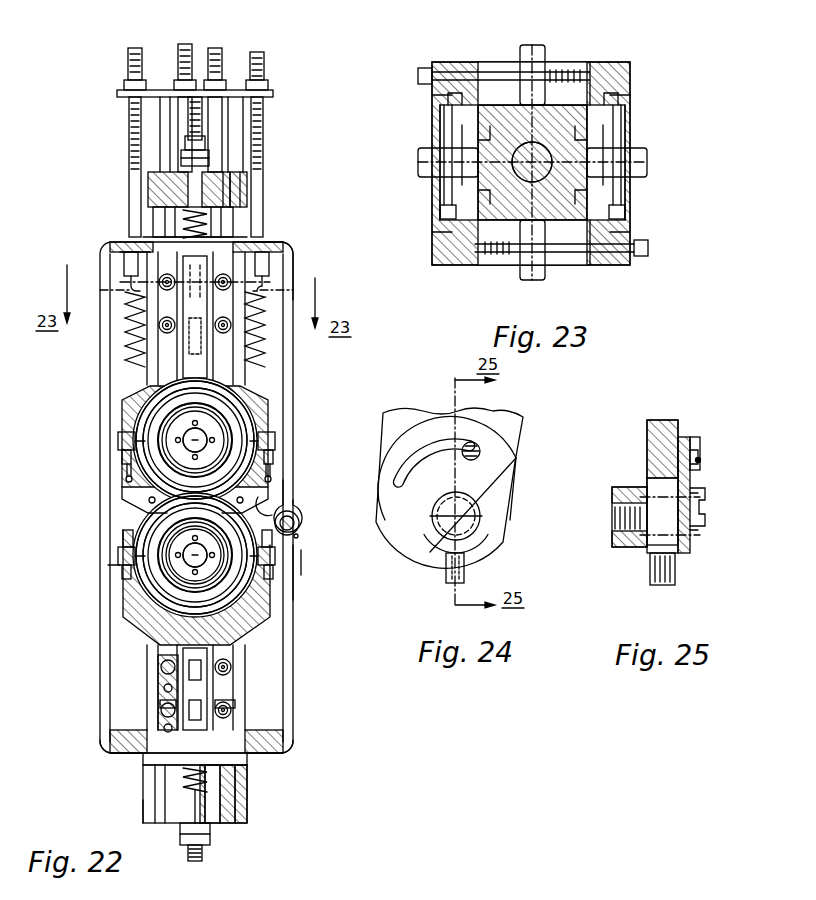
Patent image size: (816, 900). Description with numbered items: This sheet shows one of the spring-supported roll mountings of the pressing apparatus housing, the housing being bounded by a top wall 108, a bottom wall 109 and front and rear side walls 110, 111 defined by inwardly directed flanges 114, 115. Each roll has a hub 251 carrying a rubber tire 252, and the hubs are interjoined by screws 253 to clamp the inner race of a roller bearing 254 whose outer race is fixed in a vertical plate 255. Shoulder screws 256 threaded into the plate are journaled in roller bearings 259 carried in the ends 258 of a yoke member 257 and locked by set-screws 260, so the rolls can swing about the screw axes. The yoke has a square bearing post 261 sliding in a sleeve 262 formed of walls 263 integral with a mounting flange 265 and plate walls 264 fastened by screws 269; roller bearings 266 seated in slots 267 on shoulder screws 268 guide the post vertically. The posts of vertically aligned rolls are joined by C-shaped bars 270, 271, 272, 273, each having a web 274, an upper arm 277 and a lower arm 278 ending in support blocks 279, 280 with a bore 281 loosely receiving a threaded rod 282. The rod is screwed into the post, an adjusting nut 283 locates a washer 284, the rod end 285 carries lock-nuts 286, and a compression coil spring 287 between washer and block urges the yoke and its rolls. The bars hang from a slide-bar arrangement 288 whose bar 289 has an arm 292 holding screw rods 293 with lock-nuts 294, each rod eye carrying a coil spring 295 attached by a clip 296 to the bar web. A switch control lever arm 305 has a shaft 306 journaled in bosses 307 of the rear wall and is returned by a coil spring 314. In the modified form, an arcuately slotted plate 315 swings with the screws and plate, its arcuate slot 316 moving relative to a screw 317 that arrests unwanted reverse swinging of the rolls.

In FIG. 22, the top wall 108 is at (272, 254).
In FIG. 22, the bottom wall 109 is at (262, 752).
In FIG. 22, the front side wall 110 is at (100, 300).
In FIG. 22, the rear side wall 111 is at (294, 283).
In FIG. 22, the flange 114 is at (108, 724).
In FIG. 22, the flange 115 is at (103, 358).
In FIG. 22, the hub 251 is at (206, 428).
In FIG. 22, the rubber tire 252 is at (228, 404).
In FIG. 22, the screws 253 is at (208, 446).
In FIG. 22, the roller bearing 254 is at (110, 566).
In FIG. 22, the plate 255 is at (160, 572).
In FIG. 25, the plate 255 is at (621, 495).
In FIG. 22, the shoulder screws 256 is at (118, 441).
In FIG. 24, the shoulder screws 256 is at (462, 521).
In FIG. 25, the shoulder screws 256 is at (705, 530).
In FIG. 22, the yoke member 257 is at (135, 400).
In FIG. 24, the yoke member 257 is at (518, 460).
In FIG. 22, the yoke ends 258 is at (135, 418).
In FIG. 24, the yoke ends 258 is at (520, 485).
In FIG. 25, the yoke ends 258 is at (660, 455).
In FIG. 22, the roller bearings 259 is at (122, 455).
In FIG. 24, the roller bearings 259 is at (488, 540).
In FIG. 25, the roller bearings 259 is at (662, 508).
In FIG. 22, the set-screws 260 is at (126, 466).
In FIG. 24, the set-screws 260 is at (465, 568).
In FIG. 25, the set-screws 260 is at (675, 572).
In FIG. 22, the bearing post 261 is at (207, 345).
In FIG. 23, the bearing post 261 is at (590, 118).
In FIG. 22, the sleeve 262 is at (283, 247).
In FIG. 23, the sleeve 262 is at (432, 118).
In FIG. 23, the walls 263 is at (445, 193).
In FIG. 23, the walls 264 is at (592, 66).
In FIG. 22, the mounting flange 265 is at (247, 234).
In FIG. 22, the roller bearings 266 is at (231, 328).
In FIG. 23, the roller bearings 266 is at (542, 60).
In FIG. 23, the slots 267 is at (516, 62).
In FIG. 23, the shoulder screws 268 is at (418, 78).
In FIG. 22, the screws 269 is at (160, 686).
In FIG. 23, the screws 269 is at (432, 98).
In FIG. 22, the C-shaped bar 270 is at (153, 214).
In FIG. 22, the C-shaped bar 271 is at (165, 222).
In FIG. 22, the C-shaped bar 272 is at (228, 190).
In FIG. 22, the C-shaped bar 273 is at (247, 196).
In FIG. 22, the web 274 is at (160, 703).
In FIG. 22, the arm 277 is at (240, 172).
In FIG. 22, the arm 278 is at (130, 812).
In FIG. 22, the support block 279 is at (228, 182).
In FIG. 22, the support block 280 is at (206, 815).
In FIG. 22, the bore 281 is at (175, 189).
In FIG. 22, the threaded rod 282 is at (212, 214).
In FIG. 23, the threaded rod 282 is at (526, 146).
In FIG. 22, the adjusting nut 283 is at (110, 265).
In FIG. 22, the washer 284 is at (124, 256).
In FIG. 22, the rod end 285 is at (205, 140).
In FIG. 22, the lock-nuts 286 is at (181, 160).
In FIG. 22, the compression coil spring 287 is at (147, 246).
In FIG. 22, the slide-bar arrangement 288 is at (193, 126).
In FIG. 22, the bar 289 is at (178, 147).
In FIG. 22, the arm 292 is at (130, 92).
In FIG. 22, the screw rods 293 is at (138, 52).
In FIG. 22, the lock-nut 294 is at (144, 82).
In FIG. 22, the coil spring 295 is at (128, 320).
In FIG. 22, the clip 296 is at (140, 490).
In FIG. 22, the switch control lever arm 305 is at (280, 495).
In FIG. 22, the main support shaft 306 is at (292, 542).
In FIG. 22, the bosses 307 is at (299, 521).
In FIG. 22, the coil spring 314 is at (295, 536).
In FIG. 24, the arcuately slotted plate 315 is at (484, 489).
In FIG. 25, the arcuately slotted plate 315 is at (690, 484).
In FIG. 24, the arcuate slot 316 is at (429, 456).
In FIG. 25, the arcuate slot 316 is at (700, 445).
In FIG. 24, the screw 317 is at (480, 447).
In FIG. 25, the screw 317 is at (696, 461).